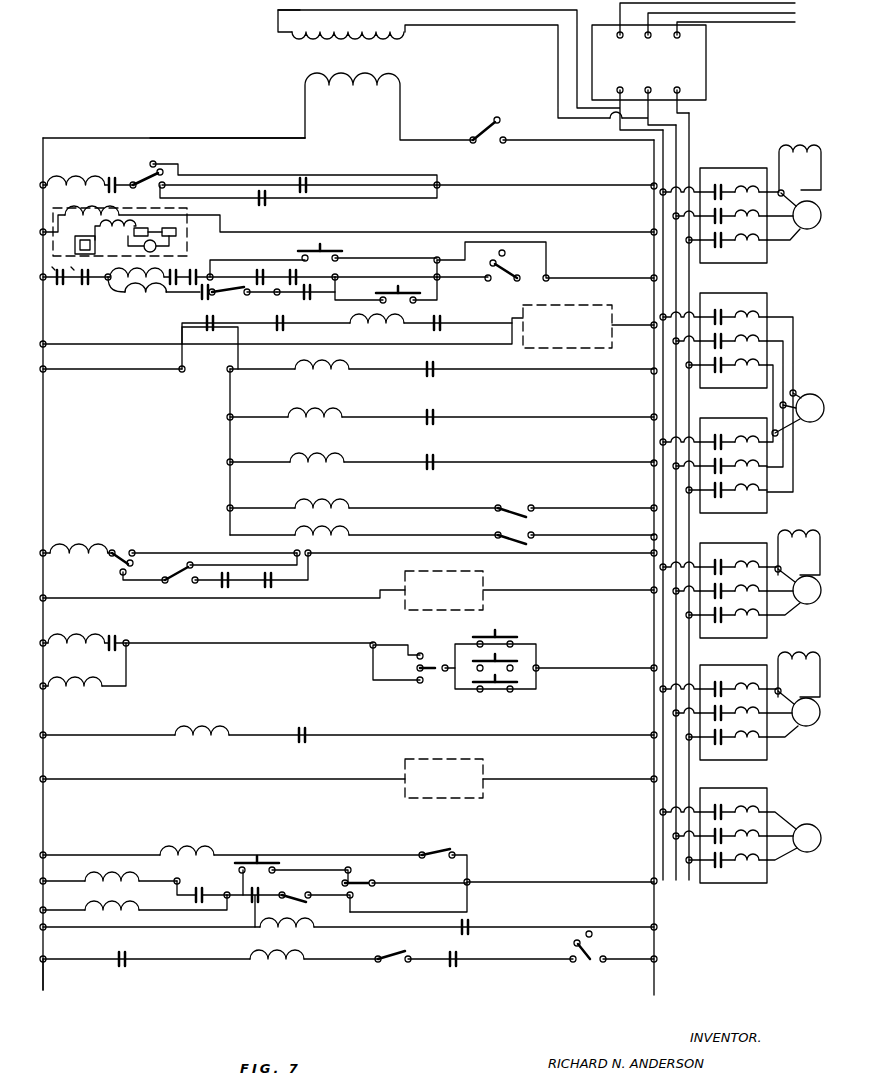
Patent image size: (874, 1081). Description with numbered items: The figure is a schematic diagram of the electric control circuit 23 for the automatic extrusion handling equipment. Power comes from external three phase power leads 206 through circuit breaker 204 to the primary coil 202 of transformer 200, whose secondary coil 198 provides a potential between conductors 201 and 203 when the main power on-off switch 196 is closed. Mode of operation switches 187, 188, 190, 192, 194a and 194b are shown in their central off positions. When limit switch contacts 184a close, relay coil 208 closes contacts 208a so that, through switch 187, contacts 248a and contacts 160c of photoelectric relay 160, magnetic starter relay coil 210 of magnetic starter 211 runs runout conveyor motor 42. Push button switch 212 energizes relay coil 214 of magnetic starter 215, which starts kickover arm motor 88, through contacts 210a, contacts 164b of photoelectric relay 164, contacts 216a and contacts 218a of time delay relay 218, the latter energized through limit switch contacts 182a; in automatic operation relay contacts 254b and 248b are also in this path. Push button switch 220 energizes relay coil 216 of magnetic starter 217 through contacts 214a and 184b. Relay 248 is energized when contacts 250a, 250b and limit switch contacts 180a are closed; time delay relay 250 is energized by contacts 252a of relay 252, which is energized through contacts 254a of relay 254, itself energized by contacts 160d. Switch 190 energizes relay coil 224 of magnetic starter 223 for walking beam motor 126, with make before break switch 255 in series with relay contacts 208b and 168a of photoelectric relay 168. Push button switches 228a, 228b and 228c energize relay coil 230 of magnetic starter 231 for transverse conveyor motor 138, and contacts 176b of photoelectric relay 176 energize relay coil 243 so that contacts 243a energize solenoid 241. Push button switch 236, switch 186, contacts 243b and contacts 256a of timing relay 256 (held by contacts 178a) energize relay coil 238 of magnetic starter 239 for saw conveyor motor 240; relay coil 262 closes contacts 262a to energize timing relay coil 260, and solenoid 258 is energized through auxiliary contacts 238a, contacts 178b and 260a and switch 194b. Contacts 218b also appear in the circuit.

The electric control circuit 23 is at (172, 998).
The runout conveyor motor 42 is at (808, 229).
The kickover arm apparatus motor 88 is at (818, 393).
The walking beam apparatus drive motor 126 is at (805, 604).
The transverse conveyor drive motor 138 is at (805, 726).
The photoelectric relay 160 is at (187, 238).
The contacts of photoelectric relay 160 160c is at (266, 205).
The contacts of photoelectric relay 160 160d is at (433, 377).
The photoelectric cell relay 164 is at (553, 350).
The contacts of photoelectric cell relay 164 164b is at (66, 286).
The photoelectric relay 168 is at (483, 600).
The relay contacts 168a is at (272, 587).
The photoelectric relay 176 is at (465, 758).
The relay contacts 176b is at (306, 727).
The contacts of switch 178 178a is at (437, 862).
The contacts of switch 178 178b is at (388, 965).
The limit switch contacts 180a is at (442, 330).
The contacts of limit switch 182 182a is at (505, 546).
The contacts of limit switch 184 184a is at (505, 519).
The contacts of limit switch 184 184b is at (245, 300).
The switch 186 is at (295, 898).
The mode of operation switch 187 is at (387, 184).
The mode of operation switch 188 is at (500, 282).
The mode of operation switch 190 is at (127, 548).
The mode of operation switch 192 is at (432, 672).
The mode of operation switch 194a is at (360, 890).
The mode of operation switch 194b is at (585, 965).
The main power on-off switch 196 is at (480, 130).
The secondary coil 198 is at (348, 92).
The transformer 200 is at (318, 55).
The conductor 201 is at (234, 138).
The primary coil 202 is at (408, 42).
The conductor 203 is at (525, 145).
The circuit breaker 204 is at (708, 55).
The three phase power leads 206 is at (733, 3).
The relay coil 208 is at (312, 515).
The relay contacts 208a is at (128, 172).
The relay contacts 208b is at (222, 588).
The magnetic starter relay coil 210 is at (80, 172).
The contacts of relay coil 210 210a is at (70, 263).
The magnetic starter 211 is at (735, 165).
The push button switch 212 is at (322, 247).
The magnetic starter relay coil 214 is at (105, 285).
The contacts of relay coil 214 214a is at (207, 300).
The magnetic starter 215 is at (740, 300).
The magnetic starter relay coil 216 is at (122, 290).
The contacts of relay coil 216 216a is at (155, 290).
The magnetic starter 217 is at (740, 428).
The time delay relay 218 is at (312, 542).
The contacts of relay 218 218a is at (168, 300).
The capacitor 218b is at (309, 300).
The kickover arm manual push button switch 220 is at (398, 283).
The magnetic starter 223 is at (740, 550).
The magnetic starter relay coil 224 is at (80, 540).
The manual push button switch 228a is at (500, 632).
The manual push button switch 228b is at (505, 660).
The manual push button switch 228c is at (490, 693).
The magnetic starter relay coil 230 is at (108, 676).
The magnetic starter 231 is at (740, 672).
The push button switch 236 is at (260, 855).
The magnetic starter relay coil 238 is at (110, 868).
The auxiliary contacts 238a is at (126, 967).
The magnetic starter 239 is at (740, 795).
The saw conveyor drive motor 240 is at (810, 852).
The solenoid 241 is at (96, 622).
The relay coil 243 is at (205, 722).
The relay contacts 243a is at (128, 637).
The relay contacts 243b is at (197, 887).
The relay 248 is at (360, 333).
The contacts of relay 248 248a is at (303, 178).
The contacts of relay 248 248b is at (290, 268).
The time delay relay 250 is at (300, 425).
The relay contacts 250a is at (205, 344).
The relay contacts 250b is at (285, 330).
The relay 252 is at (300, 470).
The relay contacts 252a is at (433, 425).
The relay 254 is at (315, 378).
The contacts of relay 254 254a is at (433, 470).
The relay contacts 254b is at (271, 272).
The make before break switch 255 is at (178, 572).
The timing relay 256 is at (205, 842).
The relay contacts 256a is at (253, 930).
The solenoid 258 is at (275, 968).
The timing relay coil 260 is at (290, 935).
The relay contacts 260a is at (458, 966).
The relay coil 262 is at (135, 910).
The relay contacts 262a is at (470, 920).